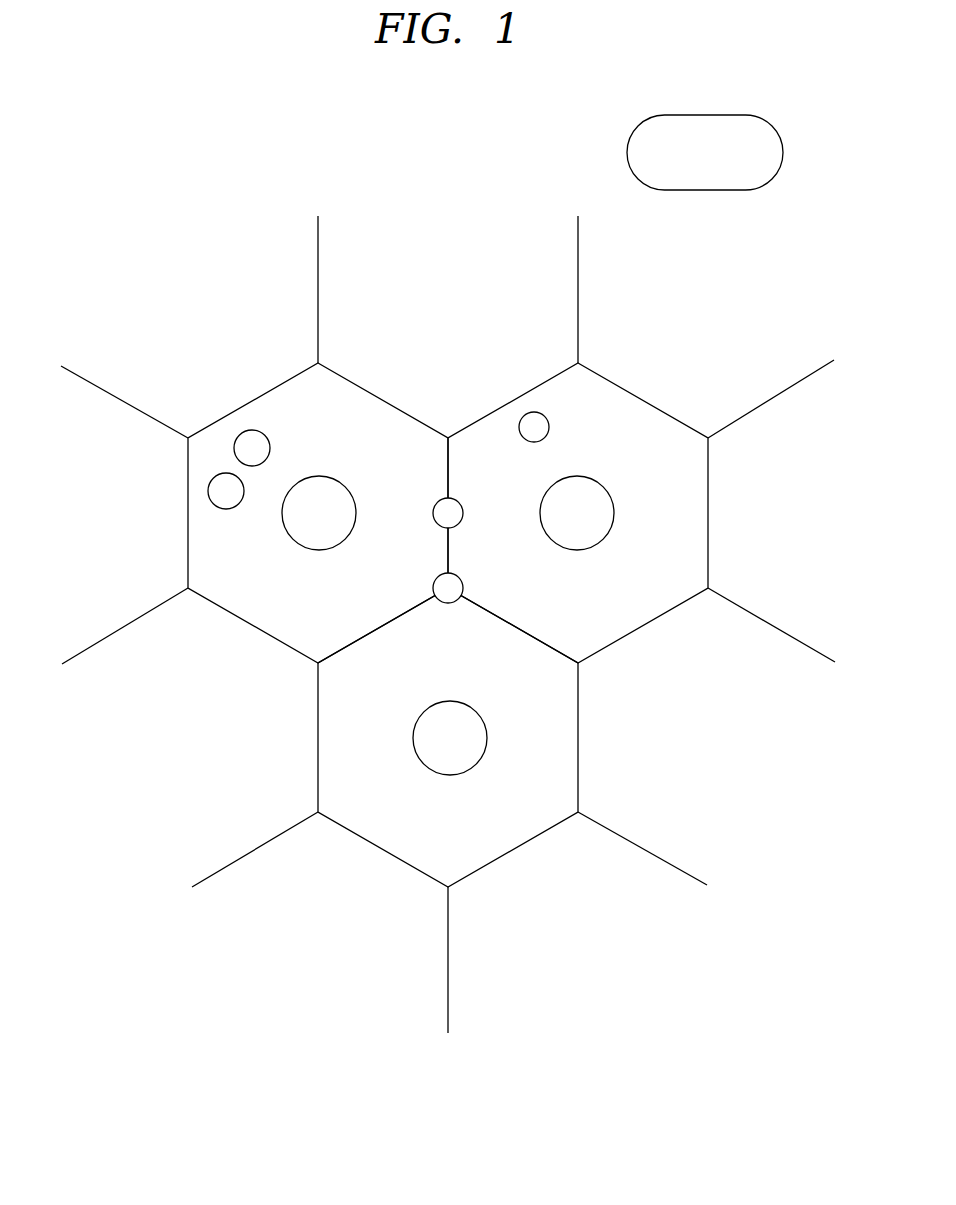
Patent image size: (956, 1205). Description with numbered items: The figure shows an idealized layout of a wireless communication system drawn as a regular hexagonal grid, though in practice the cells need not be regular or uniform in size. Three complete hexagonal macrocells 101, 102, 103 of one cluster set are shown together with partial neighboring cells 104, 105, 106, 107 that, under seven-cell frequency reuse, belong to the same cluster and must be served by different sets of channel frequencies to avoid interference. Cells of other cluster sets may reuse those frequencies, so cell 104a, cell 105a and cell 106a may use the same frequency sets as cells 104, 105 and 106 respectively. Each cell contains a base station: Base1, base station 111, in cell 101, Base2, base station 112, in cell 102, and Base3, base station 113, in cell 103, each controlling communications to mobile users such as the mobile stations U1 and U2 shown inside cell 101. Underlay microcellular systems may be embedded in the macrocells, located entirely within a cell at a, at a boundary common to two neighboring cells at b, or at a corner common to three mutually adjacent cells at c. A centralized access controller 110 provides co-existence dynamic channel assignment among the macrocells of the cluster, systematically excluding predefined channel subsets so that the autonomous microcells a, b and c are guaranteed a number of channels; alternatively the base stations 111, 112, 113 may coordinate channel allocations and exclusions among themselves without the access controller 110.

The cell 101 is at (318, 513).
The cell 102 is at (578, 513).
The cell 103 is at (448, 737).
The cell 104 is at (133, 358).
The cell 104a is at (632, 893).
The cell 105 is at (116, 584).
The cell 105a is at (782, 582).
The cell 106 is at (247, 807).
The cell 106a is at (761, 359).
The cell 107 is at (441, 624).
The access controller 110 is at (783, 152).
The base station 111 is at (356, 516).
The base station 112 is at (614, 516).
The base station 113 is at (487, 741).
The mobile station U1 is at (252, 448).
The mobile station U2 is at (226, 491).
The underlay microcellular system a is at (534, 427).
The underlay microcellular system b is at (448, 513).
The underlay microcellular system c is at (448, 588).